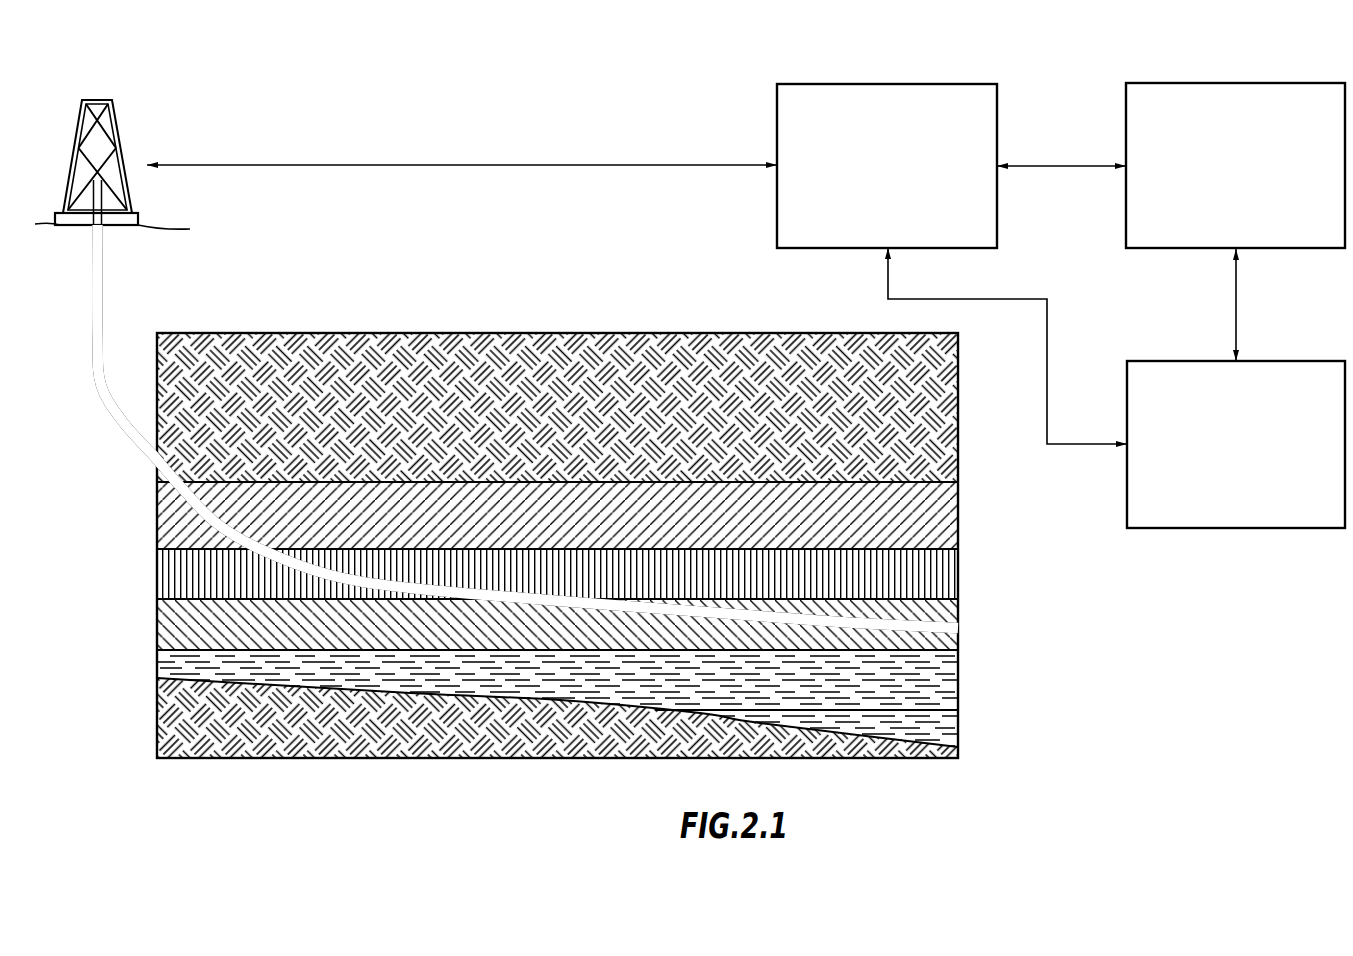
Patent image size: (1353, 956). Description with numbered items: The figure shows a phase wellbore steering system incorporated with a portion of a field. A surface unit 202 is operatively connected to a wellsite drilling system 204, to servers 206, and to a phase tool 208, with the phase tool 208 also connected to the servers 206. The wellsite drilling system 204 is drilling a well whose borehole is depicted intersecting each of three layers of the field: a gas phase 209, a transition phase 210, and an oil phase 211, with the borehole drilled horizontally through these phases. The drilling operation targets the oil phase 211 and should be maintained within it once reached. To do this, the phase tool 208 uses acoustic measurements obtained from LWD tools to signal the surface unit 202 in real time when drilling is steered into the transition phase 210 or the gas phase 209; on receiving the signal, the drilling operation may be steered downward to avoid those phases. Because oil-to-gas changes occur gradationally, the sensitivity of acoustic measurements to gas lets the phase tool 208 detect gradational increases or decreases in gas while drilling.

The surface unit 202 is at (910, 192).
The wellsite drilling system 204 is at (150, 110).
The servers 206 is at (1257, 471).
The phase tool 208 is at (1257, 192).
The gas phase 209 is at (968, 513).
The transition phase 210 is at (968, 574).
The oil phase 211 is at (968, 620).